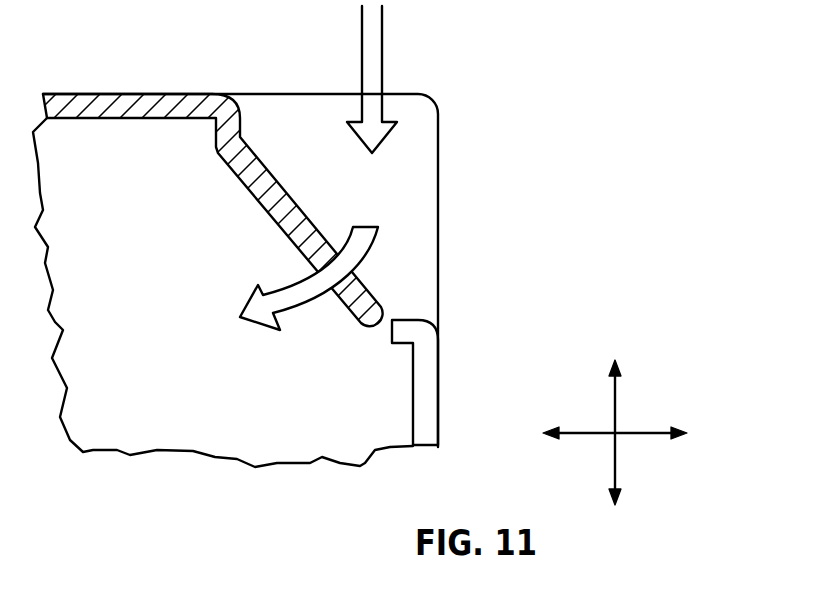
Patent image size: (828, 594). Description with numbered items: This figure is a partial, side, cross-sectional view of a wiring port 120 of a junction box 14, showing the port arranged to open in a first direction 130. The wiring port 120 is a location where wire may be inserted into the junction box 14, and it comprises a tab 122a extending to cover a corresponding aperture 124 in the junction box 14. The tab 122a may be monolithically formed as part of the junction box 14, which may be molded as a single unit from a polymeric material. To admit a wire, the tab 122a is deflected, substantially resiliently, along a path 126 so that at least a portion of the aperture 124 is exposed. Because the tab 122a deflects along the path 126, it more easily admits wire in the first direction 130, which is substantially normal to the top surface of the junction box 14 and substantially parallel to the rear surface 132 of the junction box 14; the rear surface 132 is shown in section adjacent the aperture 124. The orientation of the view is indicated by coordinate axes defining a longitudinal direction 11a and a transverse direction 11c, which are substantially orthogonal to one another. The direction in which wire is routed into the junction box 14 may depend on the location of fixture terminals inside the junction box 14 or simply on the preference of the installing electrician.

The junction box 14 is at (428, 125).
The wiring port 120 is at (403, 200).
The tab 122a is at (281, 205).
The aperture 124 is at (396, 308).
The path 126 is at (352, 251).
The first direction 130 is at (382, 43).
The rear surface 132 is at (432, 382).
The longitudinal direction 11a is at (615, 400).
The transverse direction 11c is at (647, 436).